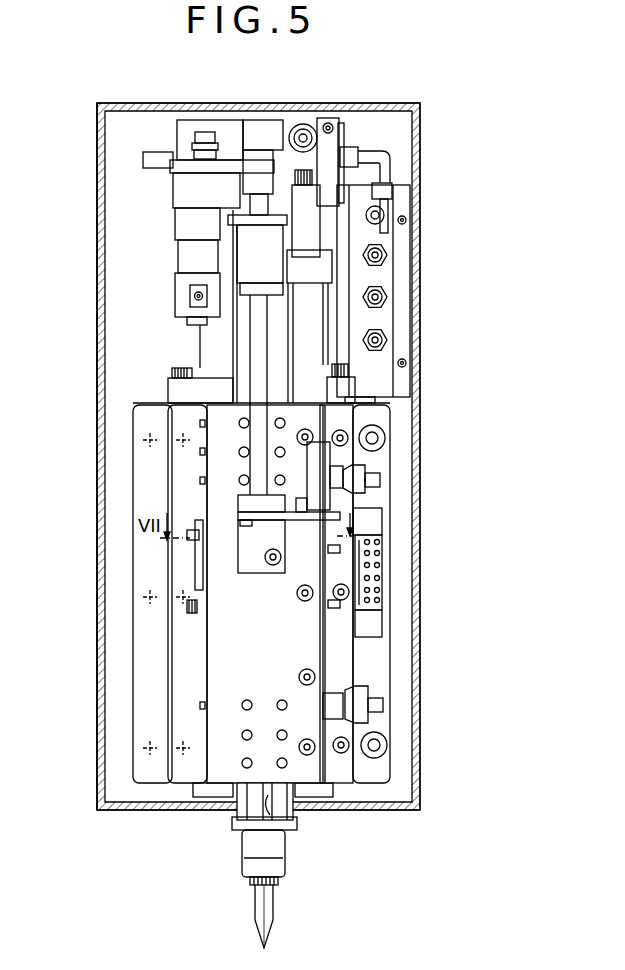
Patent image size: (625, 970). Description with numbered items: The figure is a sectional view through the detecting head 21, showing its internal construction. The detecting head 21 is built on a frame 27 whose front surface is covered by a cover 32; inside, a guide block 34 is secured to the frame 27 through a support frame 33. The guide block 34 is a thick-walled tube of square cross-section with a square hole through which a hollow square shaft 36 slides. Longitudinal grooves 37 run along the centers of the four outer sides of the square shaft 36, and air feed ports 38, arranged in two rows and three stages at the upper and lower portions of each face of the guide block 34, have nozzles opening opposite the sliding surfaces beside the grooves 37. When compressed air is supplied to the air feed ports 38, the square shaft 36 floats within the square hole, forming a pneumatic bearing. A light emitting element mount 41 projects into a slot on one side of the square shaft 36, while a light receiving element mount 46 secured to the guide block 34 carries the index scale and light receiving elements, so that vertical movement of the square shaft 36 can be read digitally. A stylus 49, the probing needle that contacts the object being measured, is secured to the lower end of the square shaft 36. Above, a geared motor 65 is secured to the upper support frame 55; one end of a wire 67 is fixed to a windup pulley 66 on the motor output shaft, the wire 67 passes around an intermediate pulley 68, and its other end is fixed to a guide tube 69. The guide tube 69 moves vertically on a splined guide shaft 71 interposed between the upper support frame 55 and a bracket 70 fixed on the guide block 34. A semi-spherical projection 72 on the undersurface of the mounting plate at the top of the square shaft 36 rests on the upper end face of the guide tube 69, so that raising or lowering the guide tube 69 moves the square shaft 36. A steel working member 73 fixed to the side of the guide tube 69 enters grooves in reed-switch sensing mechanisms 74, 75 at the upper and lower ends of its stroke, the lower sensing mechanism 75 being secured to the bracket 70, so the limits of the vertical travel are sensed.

The detecting head 21 is at (423, 408).
The frame 27 is at (113, 382).
The cover 32 is at (97, 292).
The support frame 33 is at (185, 651).
The guide block 34 is at (218, 666).
The square shaft 36 is at (242, 342).
The grooves 37 is at (283, 833).
The air feed ports 38 is at (239, 451).
The light emitting element mount 41 is at (200, 608).
The light receiving element mount 46 is at (323, 567).
The stylus 49 is at (275, 900).
The upper support frame 55 is at (253, 120).
The motor 65 is at (178, 213).
The windup pulley 66 is at (203, 132).
The wire 67 is at (250, 160).
The intermediate pulley 68 is at (304, 124).
The guide tube 69 is at (240, 275).
The bracket 70 is at (256, 563).
The guide shaft 71 is at (257, 358).
The semi-spherical projection 72 is at (257, 228).
The working member 73 is at (297, 275).
The sensing mechanism 74 is at (305, 250).
The sensing mechanism 75 is at (312, 456).